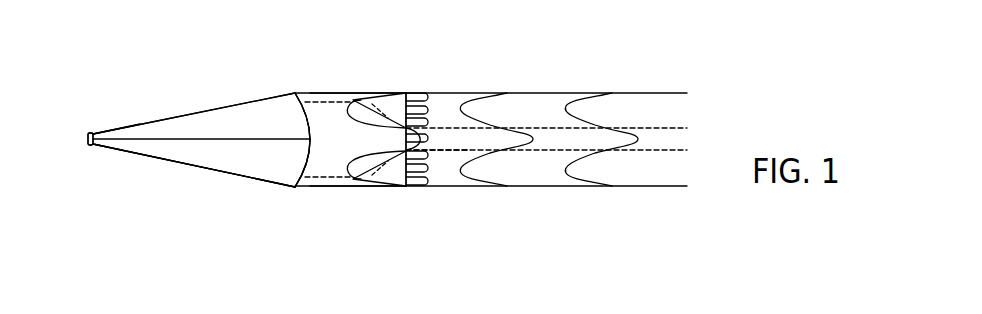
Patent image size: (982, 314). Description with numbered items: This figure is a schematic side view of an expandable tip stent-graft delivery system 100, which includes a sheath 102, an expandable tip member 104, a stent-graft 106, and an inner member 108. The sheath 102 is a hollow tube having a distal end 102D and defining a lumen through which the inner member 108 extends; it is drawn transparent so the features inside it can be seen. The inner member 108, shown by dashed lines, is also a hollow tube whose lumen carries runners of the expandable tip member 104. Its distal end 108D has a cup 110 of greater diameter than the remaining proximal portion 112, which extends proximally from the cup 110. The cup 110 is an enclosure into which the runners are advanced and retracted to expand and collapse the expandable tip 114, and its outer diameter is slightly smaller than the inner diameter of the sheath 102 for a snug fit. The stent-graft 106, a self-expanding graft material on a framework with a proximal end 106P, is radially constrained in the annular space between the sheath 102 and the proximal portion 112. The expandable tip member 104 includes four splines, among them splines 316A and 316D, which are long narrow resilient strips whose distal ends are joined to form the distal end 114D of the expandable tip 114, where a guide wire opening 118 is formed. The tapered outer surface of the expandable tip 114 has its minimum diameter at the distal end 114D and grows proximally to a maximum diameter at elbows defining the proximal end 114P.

The expandable tip stent-graft delivery system 100 is at (610, 50).
The sheath 102 is at (648, 92).
The distal end of sheath 102D is at (312, 102).
The expandable tip member 104 is at (224, 82).
The stent-graft 106 is at (453, 103).
The proximal end of stent-graft 106P is at (427, 93).
The inner member 108 is at (645, 160).
The distal end of inner member 108D is at (331, 101).
The cup 110 is at (327, 179).
The proximal portion of inner member 112 is at (449, 151).
The expandable tip 114 is at (224, 174).
The distal end of expandable tip 114D is at (97, 130).
The proximal end of expandable tip 114P is at (297, 188).
The guide wire opening 118 is at (89, 141).
The spline 316A is at (272, 172).
The spline 316D is at (262, 105).